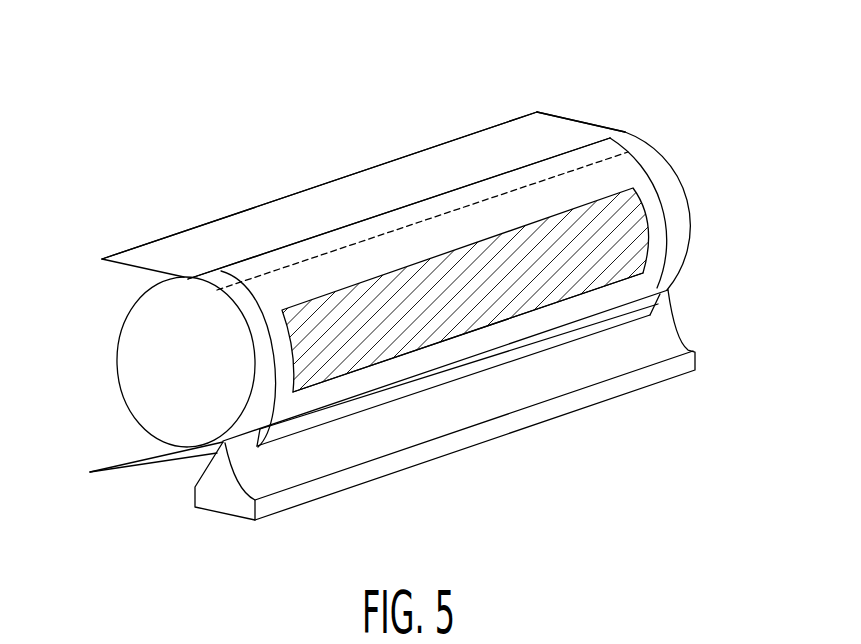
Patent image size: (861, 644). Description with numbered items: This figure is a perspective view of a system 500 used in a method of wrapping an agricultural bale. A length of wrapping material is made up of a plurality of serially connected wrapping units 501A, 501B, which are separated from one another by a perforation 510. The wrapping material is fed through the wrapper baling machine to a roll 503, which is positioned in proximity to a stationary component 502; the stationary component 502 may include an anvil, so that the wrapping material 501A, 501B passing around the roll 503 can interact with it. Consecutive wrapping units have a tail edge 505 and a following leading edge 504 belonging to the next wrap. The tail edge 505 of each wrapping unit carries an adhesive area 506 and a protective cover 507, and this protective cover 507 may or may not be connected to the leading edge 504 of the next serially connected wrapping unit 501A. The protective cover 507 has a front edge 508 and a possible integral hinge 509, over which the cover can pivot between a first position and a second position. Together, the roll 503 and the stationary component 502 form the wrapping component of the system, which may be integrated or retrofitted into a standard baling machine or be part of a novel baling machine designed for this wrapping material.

The roller assembly 500 is at (108, 213).
The wrapping unit 501A is at (515, 131).
The wrapping unit 501B is at (657, 158).
The stationary component 502 is at (665, 337).
The roller 503 is at (143, 372).
The leading edge 504 is at (333, 242).
The tail edge 505 is at (413, 242).
The adhesive area 506 is at (635, 230).
The protective cover 507 is at (530, 325).
The front edge 508 is at (480, 363).
The integral hinge 509 is at (462, 183).
The perforation 510 is at (632, 178).